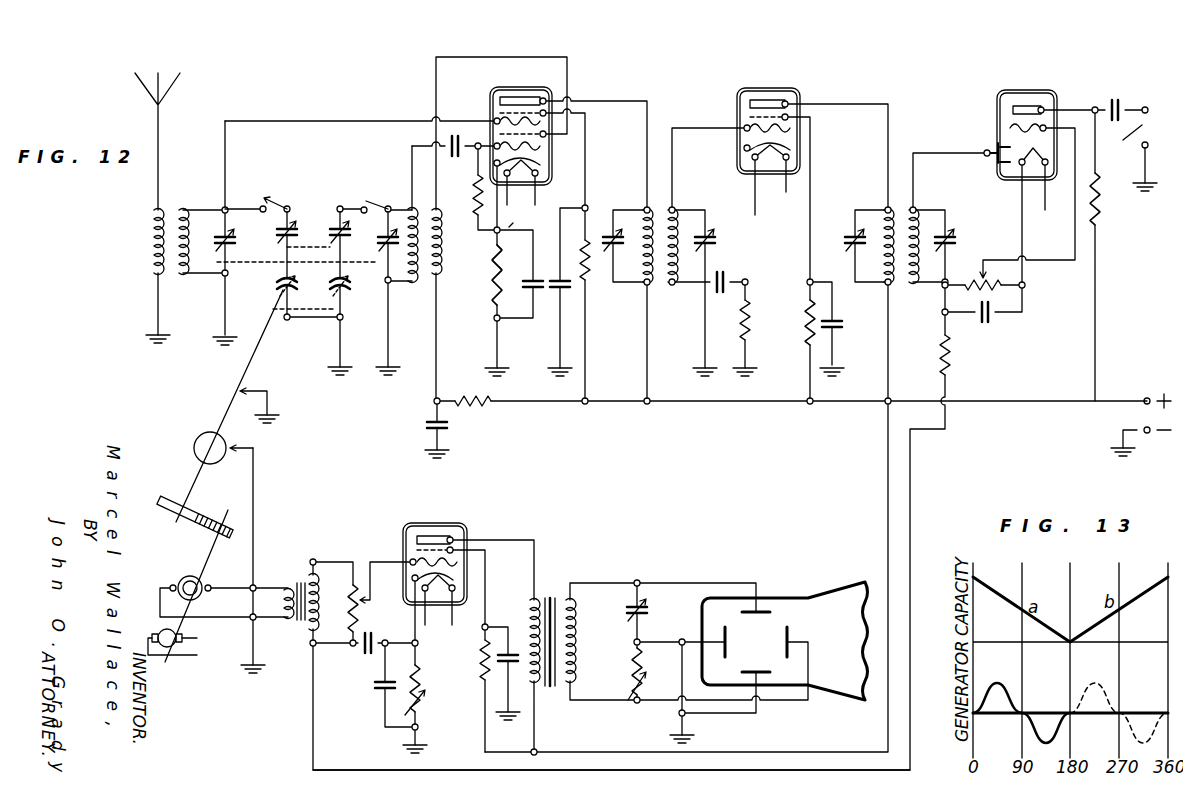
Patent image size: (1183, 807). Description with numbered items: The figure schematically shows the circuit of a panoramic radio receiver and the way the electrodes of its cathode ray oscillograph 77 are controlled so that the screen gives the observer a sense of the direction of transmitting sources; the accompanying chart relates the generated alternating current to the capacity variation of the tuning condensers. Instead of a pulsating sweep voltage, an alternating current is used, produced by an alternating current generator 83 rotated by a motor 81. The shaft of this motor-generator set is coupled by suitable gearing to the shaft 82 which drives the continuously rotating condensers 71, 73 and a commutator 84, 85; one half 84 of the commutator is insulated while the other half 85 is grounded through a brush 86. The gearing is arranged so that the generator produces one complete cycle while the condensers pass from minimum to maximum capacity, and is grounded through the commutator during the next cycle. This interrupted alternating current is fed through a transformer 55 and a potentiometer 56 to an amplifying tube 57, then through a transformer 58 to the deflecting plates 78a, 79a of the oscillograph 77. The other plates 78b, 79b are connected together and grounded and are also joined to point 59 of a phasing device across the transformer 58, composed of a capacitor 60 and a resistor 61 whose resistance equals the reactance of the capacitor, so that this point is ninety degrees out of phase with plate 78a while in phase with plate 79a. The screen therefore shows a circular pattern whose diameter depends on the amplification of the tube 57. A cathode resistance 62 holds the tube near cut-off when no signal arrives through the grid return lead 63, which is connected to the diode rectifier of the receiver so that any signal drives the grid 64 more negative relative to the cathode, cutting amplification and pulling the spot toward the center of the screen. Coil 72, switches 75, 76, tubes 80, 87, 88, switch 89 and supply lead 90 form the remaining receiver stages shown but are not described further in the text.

The transformer 55 is at (295, 583).
The potentiometer 56 is at (360, 619).
The amplifying tube 57 is at (453, 519).
The transformer 58 is at (556, 600).
The point of phasing device 59 is at (629, 639).
The capacitor 60 is at (630, 596).
The resistor 61 is at (634, 703).
The cathode resistance 62 is at (429, 699).
The grid return lead 63 is at (340, 770).
The grid 64 is at (410, 560).
The continuously rotating condenser 71 is at (352, 291).
The oscillator tuned circuit 72 is at (395, 266).
The continuously rotating condenser 73 is at (278, 297).
The switch 75 is at (292, 220).
The switch 76 is at (328, 222).
The oscillograph 77 is at (838, 598).
The deflecting plate 78a is at (763, 605).
The deflecting plate 78b is at (765, 678).
The deflecting plate 79a is at (795, 636).
The deflecting plate 79b is at (712, 641).
The mixer tube 80 is at (518, 85).
The motor 81 is at (168, 648).
The shaft 82 is at (250, 359).
The alternating current generator 83 is at (186, 577).
The commutator half 84 is at (195, 444).
The commutator half 85 is at (227, 470).
The brush 86 is at (256, 390).
The intermediate frequency amplifier tube 87 is at (771, 89).
The detector tube 88 is at (1031, 91).
The switch 89 is at (1133, 158).
The plate supply conductor 90 is at (705, 403).